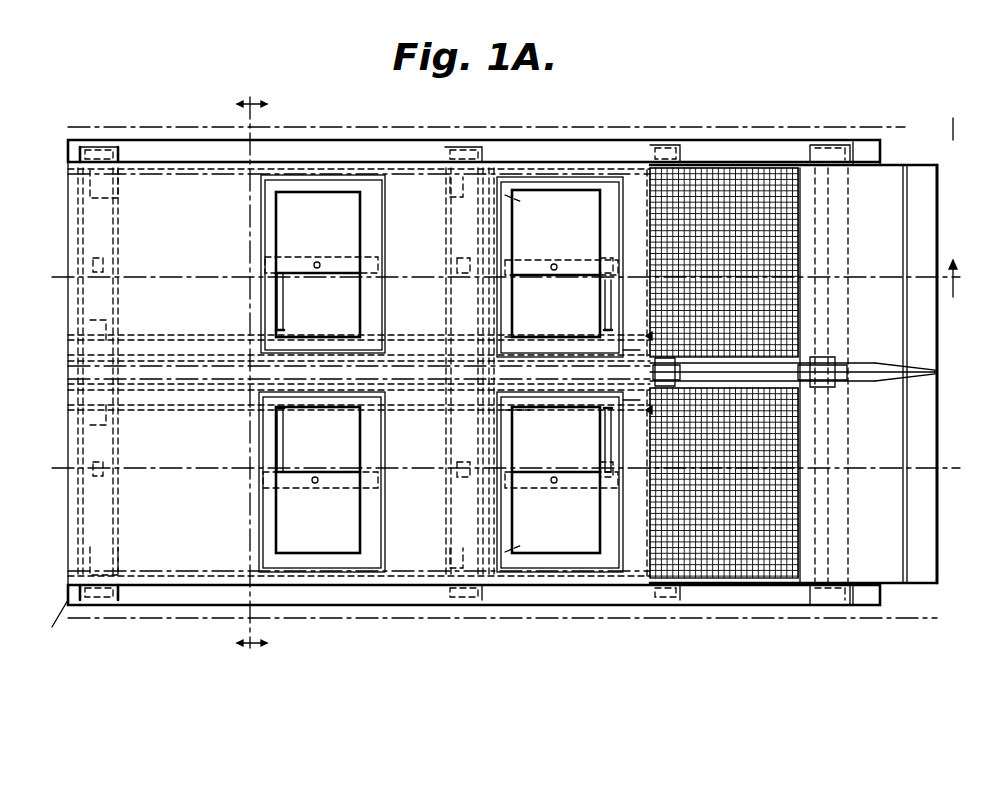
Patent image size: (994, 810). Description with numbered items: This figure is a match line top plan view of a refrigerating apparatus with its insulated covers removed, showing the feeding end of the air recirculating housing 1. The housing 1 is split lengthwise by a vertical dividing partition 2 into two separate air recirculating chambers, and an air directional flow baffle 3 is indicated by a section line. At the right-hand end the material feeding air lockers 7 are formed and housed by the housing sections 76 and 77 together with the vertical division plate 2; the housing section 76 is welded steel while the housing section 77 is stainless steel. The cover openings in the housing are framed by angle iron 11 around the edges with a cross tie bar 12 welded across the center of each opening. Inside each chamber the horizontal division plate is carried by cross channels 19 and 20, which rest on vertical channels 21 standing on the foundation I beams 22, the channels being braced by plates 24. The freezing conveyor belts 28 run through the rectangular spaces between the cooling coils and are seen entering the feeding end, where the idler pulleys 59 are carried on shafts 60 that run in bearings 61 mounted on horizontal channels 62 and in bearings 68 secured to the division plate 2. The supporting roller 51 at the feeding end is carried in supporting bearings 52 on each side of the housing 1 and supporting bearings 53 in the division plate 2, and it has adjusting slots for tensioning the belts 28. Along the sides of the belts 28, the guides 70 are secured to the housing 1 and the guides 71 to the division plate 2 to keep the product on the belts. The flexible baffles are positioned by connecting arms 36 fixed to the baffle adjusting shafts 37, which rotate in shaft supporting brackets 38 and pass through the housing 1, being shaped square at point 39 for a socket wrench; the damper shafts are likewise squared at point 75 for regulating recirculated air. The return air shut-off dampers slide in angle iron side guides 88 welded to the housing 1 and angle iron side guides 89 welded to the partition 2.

The air recirculating housing 1 is at (174, 606).
The vertical dividing partition 2 is at (915, 370).
The air directional flow baffle 3 is at (264, 374).
The material feeding air locker 7 is at (907, 324).
The angle iron 11 is at (276, 222).
The cross tie bar 12 is at (320, 257).
The cross channel 19 is at (447, 236).
The cross channel 20 is at (118, 230).
The vertical channel 21 is at (487, 150).
The foundation I beam 22 is at (54, 625).
The plate 24 is at (105, 198).
The freezing conveyor belt 28 is at (800, 262).
The connecting arm 36 is at (284, 301).
The baffle adjusting shaft 37 is at (333, 340).
The shaft supporting bracket 38 is at (110, 329).
The square shaft end 39 is at (650, 334).
The supporting roller 51 is at (118, 148).
The supporting bearing 52 is at (88, 146).
The supporting bearing 53 is at (700, 375).
The idler pulley 59 is at (848, 206).
The shaft 60 is at (828, 236).
The bearing 61 is at (815, 145).
The horizontal channel 62 is at (856, 148).
The bearing 68 is at (836, 374).
The guide 70 is at (905, 172).
The guide 71 is at (845, 363).
The square shaft end 75 is at (631, 373).
The housing section 76 is at (913, 165).
The housing section 77 is at (937, 242).
The angle iron side guide 88 is at (518, 203).
The angle iron side guide 89 is at (515, 336).